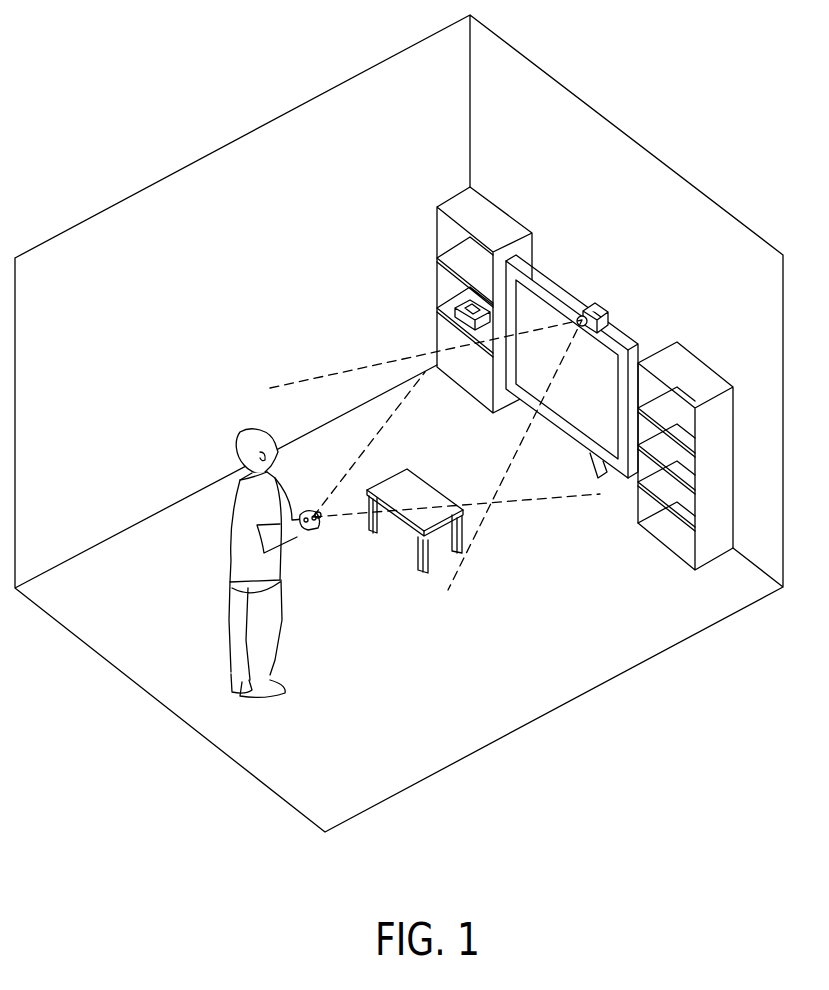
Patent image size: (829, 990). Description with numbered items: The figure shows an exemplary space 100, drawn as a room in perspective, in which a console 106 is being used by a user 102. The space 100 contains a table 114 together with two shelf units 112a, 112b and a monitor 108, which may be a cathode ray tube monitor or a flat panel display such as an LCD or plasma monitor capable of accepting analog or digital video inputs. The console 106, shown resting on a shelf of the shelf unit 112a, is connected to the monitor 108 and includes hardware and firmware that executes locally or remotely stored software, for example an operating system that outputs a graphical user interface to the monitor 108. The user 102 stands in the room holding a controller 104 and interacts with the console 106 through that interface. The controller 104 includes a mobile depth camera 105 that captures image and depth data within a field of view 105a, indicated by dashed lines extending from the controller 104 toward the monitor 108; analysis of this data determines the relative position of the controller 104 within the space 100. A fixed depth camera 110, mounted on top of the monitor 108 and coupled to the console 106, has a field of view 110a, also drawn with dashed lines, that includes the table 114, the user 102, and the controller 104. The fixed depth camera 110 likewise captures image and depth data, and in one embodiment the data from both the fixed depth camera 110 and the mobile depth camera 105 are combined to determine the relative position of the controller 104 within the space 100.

The space 100 is at (648, 192).
The user 102 is at (254, 432).
The controller 104 is at (314, 537).
The mobile depth camera 105 is at (320, 512).
The field of view 105a is at (340, 477).
The console 106 is at (452, 313).
The monitor 108 is at (564, 288).
The fixed depth camera 110 is at (601, 307).
The field of view 110a is at (318, 378).
The shelf unit 112a is at (447, 200).
The shelf unit 112b is at (713, 366).
The table 114 is at (410, 532).